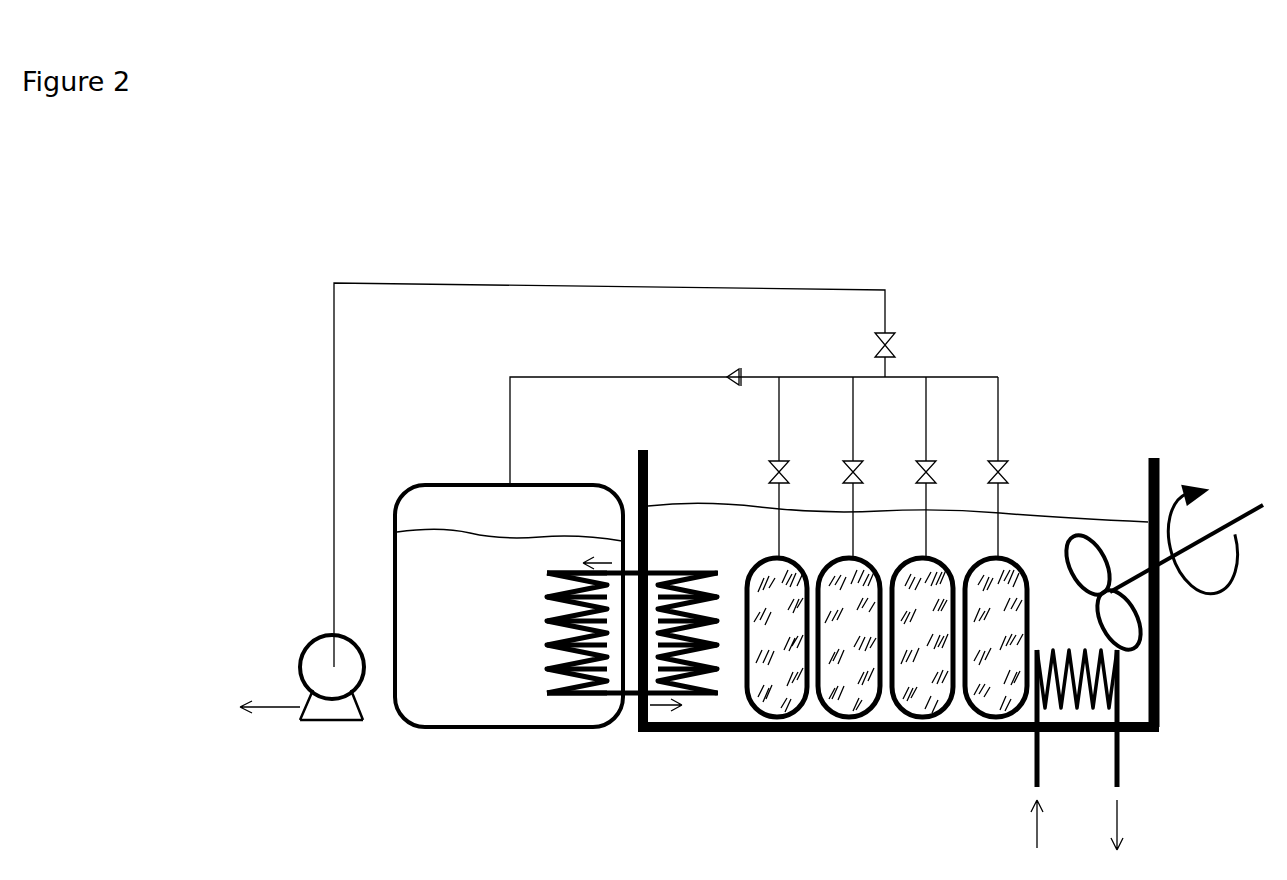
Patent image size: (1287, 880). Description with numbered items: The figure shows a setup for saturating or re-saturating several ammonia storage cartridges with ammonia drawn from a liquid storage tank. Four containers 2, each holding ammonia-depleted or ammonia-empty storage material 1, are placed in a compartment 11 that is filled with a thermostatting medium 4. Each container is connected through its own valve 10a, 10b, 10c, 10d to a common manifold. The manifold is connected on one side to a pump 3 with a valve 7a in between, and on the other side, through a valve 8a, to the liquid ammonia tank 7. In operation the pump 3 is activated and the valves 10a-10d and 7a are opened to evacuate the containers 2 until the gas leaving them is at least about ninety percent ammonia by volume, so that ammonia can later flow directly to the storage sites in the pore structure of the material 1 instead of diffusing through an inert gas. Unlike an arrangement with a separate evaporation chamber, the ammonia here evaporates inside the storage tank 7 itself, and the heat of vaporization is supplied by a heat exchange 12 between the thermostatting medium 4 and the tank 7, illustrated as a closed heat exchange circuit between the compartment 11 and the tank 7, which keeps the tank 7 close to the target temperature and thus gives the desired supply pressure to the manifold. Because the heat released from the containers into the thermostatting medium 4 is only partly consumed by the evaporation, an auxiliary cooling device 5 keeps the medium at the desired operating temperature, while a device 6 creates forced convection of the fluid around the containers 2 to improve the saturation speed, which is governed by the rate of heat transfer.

The ammonia storage material 1 is at (777, 637).
The container 2 is at (805, 713).
The pump 3 is at (302, 690).
The thermostatting medium 4 is at (898, 588).
The auxiliary cooling device 5 is at (1085, 750).
The forced convection device 6 is at (1160, 566).
The liquid ammonia tank 7 is at (509, 606).
The valve 7a is at (896, 344).
The valve 8a is at (726, 377).
The valve 10a is at (790, 467).
The valve 10b is at (869, 467).
The valve 10c is at (941, 467).
The valve 10d is at (1014, 467).
The compartment 11 is at (1149, 583).
The heat exchange 12 is at (632, 633).